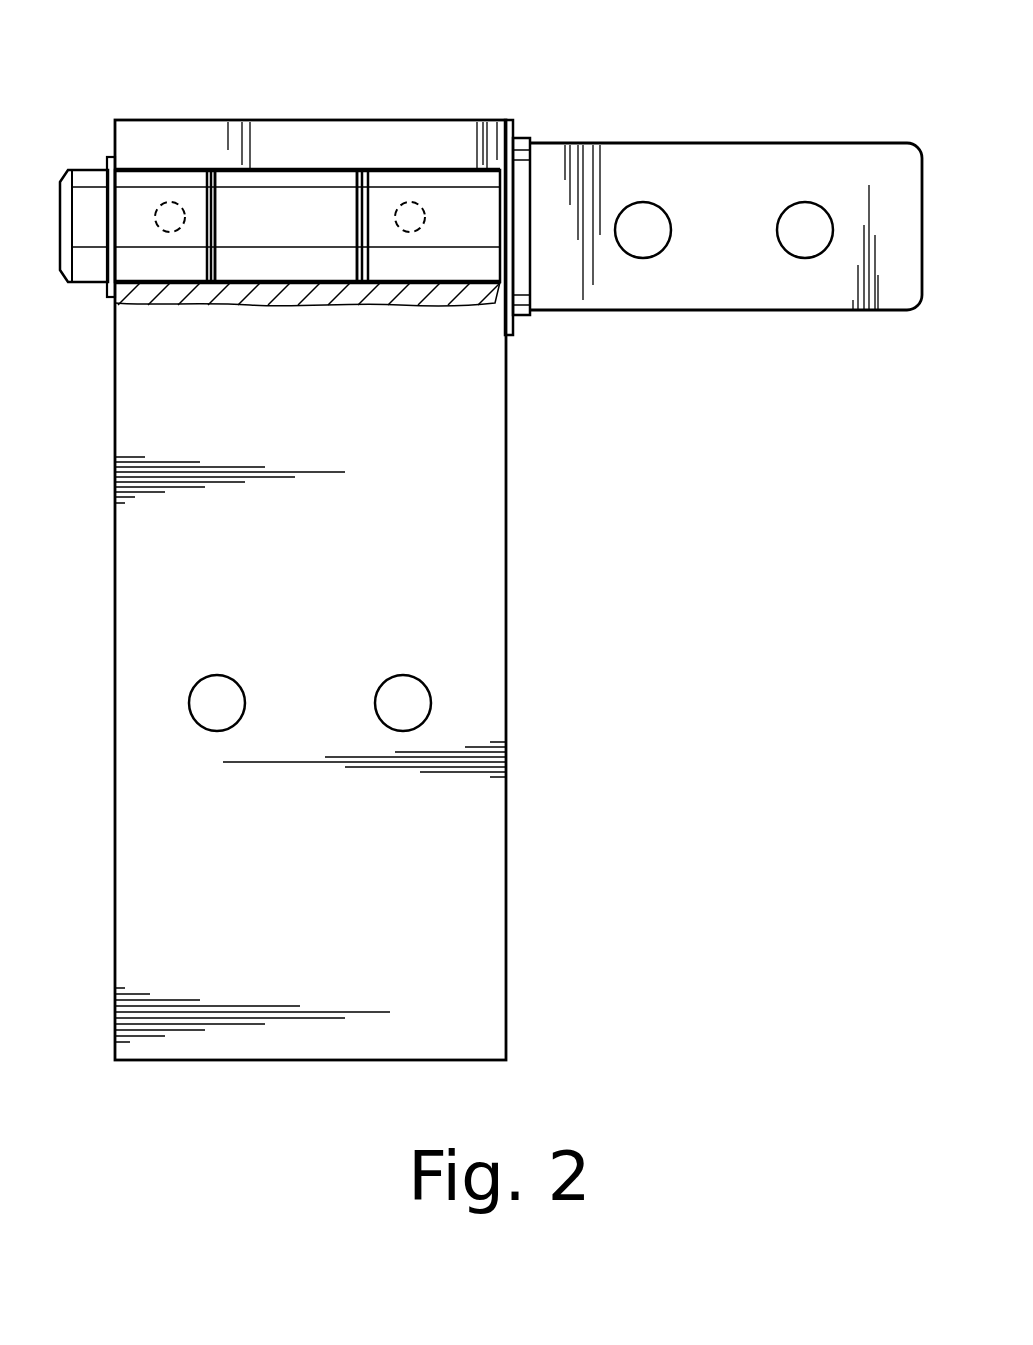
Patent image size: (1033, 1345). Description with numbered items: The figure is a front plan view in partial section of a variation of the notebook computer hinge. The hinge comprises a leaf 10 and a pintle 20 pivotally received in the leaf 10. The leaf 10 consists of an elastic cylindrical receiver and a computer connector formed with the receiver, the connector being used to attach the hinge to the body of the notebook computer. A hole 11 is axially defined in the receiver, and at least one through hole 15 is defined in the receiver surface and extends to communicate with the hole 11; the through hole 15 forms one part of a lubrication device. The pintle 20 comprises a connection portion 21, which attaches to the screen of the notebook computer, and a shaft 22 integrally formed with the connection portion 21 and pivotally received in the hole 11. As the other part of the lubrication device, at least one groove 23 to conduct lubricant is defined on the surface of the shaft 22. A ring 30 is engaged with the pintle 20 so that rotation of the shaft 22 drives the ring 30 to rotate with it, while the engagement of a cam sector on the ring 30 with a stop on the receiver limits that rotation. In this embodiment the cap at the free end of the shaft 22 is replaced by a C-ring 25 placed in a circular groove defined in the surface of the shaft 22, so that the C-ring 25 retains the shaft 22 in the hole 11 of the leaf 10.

The leaf 10 is at (558, 637).
The hole 11 is at (442, 170).
The through hole 15 is at (168, 233).
The pintle 20 is at (613, 100).
The connection portion 21 is at (680, 160).
The shaft 22 is at (287, 280).
The groove 23 is at (210, 284).
The C-ring 25 is at (108, 298).
The ring 30 is at (528, 100).